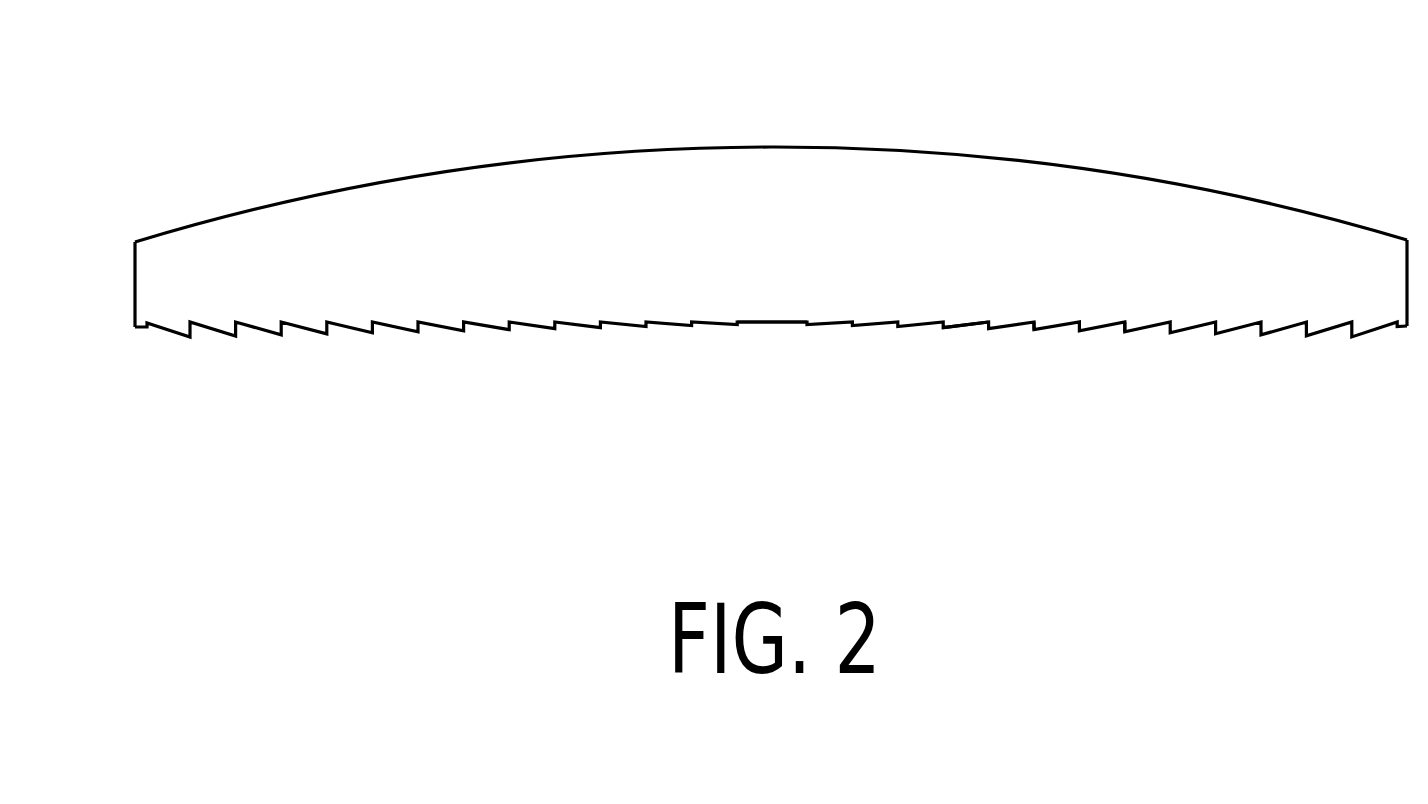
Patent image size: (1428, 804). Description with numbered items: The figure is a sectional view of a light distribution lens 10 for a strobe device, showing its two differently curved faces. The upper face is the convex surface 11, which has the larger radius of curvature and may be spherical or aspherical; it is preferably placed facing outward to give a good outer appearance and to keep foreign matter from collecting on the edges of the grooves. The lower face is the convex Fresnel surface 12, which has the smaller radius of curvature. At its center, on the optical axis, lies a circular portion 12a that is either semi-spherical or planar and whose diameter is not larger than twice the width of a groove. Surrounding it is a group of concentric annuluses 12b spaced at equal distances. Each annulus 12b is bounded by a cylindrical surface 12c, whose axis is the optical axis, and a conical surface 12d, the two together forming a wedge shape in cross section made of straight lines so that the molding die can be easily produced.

The light distribution lens 10 is at (1165, 118).
The convex surface 11 is at (1034, 162).
The convex Fresnel surface 12 is at (1202, 340).
The circular portion 12a is at (757, 325).
The annulus 12b is at (1053, 327).
The cylindrical surface 12c is at (980, 326).
The conical surface 12d is at (1127, 330).